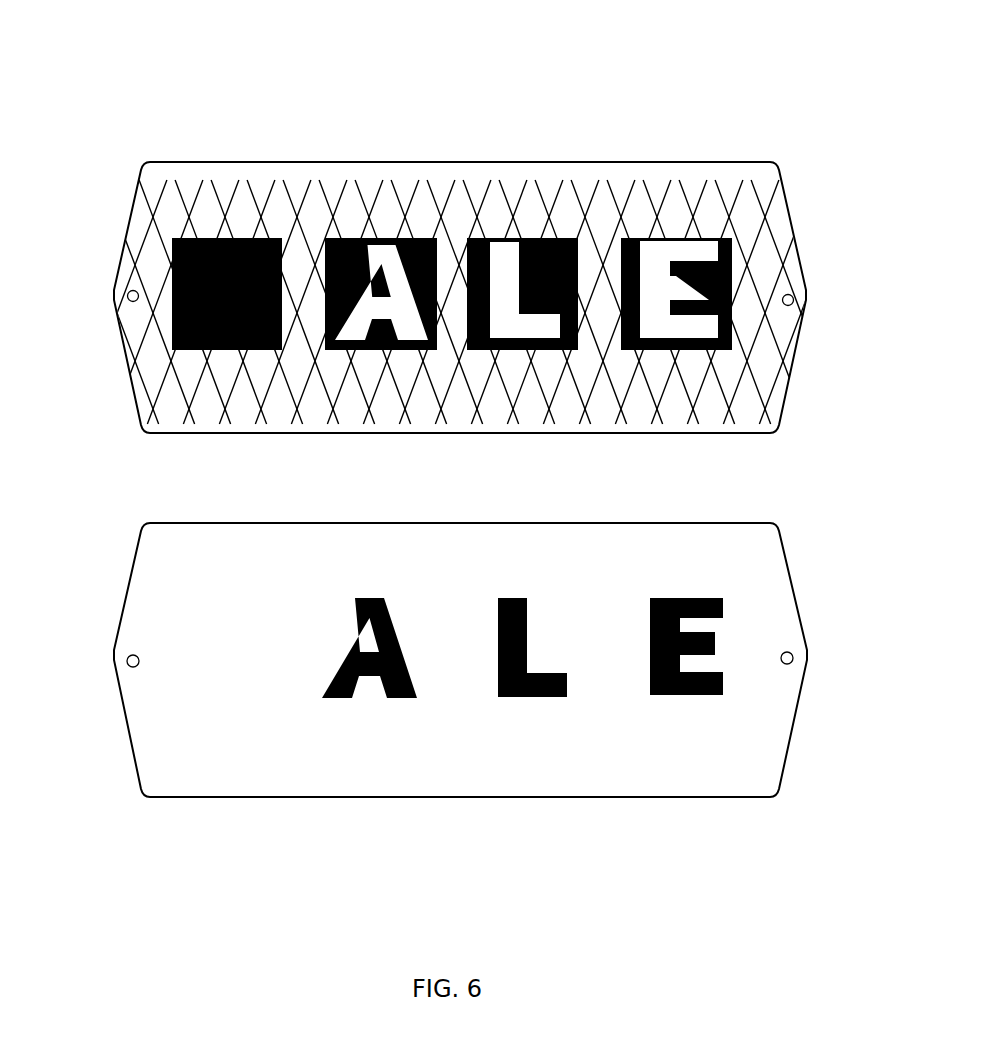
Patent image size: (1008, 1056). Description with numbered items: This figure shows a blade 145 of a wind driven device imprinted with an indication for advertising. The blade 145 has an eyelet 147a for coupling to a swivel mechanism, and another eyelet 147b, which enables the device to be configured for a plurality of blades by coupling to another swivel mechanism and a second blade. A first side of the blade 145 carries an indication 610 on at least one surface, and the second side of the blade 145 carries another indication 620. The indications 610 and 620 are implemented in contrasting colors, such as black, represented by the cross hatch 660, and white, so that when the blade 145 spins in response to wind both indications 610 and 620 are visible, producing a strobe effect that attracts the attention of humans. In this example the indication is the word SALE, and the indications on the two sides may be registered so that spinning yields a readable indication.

The blade 145 is at (655, 161).
The eyelet 147a is at (127, 299).
The second eyelet 147b is at (794, 300).
The indication 610 is at (733, 348).
The indication 620 is at (722, 607).
The cross hatch 660 is at (462, 195).